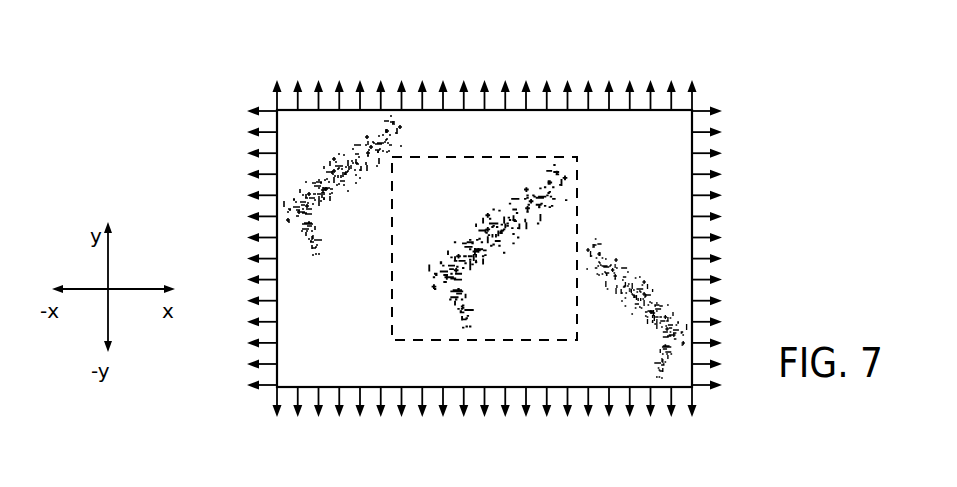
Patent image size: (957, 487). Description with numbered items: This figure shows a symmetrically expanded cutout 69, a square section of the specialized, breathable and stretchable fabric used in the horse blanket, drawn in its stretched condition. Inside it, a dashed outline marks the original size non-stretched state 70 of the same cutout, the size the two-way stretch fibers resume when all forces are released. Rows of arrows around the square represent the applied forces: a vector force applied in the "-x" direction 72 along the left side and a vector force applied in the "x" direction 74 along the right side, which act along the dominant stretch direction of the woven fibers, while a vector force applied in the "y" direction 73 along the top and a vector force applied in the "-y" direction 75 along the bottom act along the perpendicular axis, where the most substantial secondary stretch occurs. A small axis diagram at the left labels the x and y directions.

The expanded cutout 69 is at (275, 388).
The original size non-stretched state 70 is at (500, 173).
The vector force applied in the "-x" direction 72 is at (252, 195).
The vector force applied in the "y" direction 73 is at (443, 88).
The vector force applied in the "x" direction 74 is at (717, 214).
The vector force applied in the "-y" direction 75 is at (503, 395).